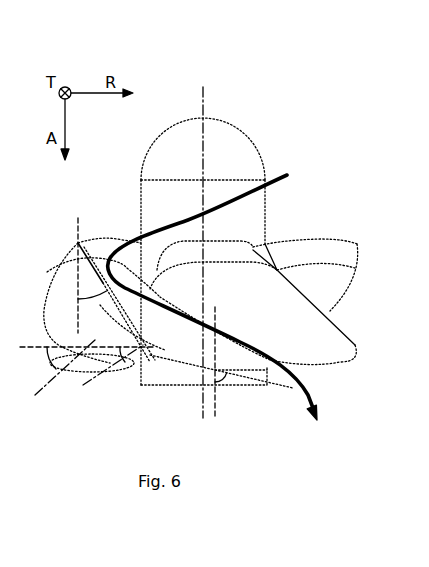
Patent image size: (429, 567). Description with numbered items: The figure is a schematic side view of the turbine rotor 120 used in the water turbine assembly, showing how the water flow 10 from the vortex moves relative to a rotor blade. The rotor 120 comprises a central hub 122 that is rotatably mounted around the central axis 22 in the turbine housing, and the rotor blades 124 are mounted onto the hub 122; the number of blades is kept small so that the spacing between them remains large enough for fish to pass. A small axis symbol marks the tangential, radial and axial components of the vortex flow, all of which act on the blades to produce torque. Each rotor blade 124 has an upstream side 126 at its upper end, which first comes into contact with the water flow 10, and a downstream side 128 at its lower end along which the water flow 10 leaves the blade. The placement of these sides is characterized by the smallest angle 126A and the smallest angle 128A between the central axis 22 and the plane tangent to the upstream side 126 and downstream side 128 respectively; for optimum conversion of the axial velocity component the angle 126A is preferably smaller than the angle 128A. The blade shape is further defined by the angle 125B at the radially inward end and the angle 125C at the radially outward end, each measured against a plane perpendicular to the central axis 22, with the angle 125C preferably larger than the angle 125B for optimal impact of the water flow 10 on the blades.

The water flow 10 is at (288, 176).
The central axis 22 is at (203, 425).
The turbine rotor 120 is at (299, 133).
The central hub 122 is at (237, 137).
The rotor blade 124 is at (333, 290).
The angle at radially inward end 125B is at (116, 372).
The angle at radially outward end 125C is at (80, 367).
The upstream side 126 is at (78, 243).
The upstream side angle 126A is at (100, 307).
The downstream side 128 is at (297, 363).
The downstream side angle 128A is at (221, 362).